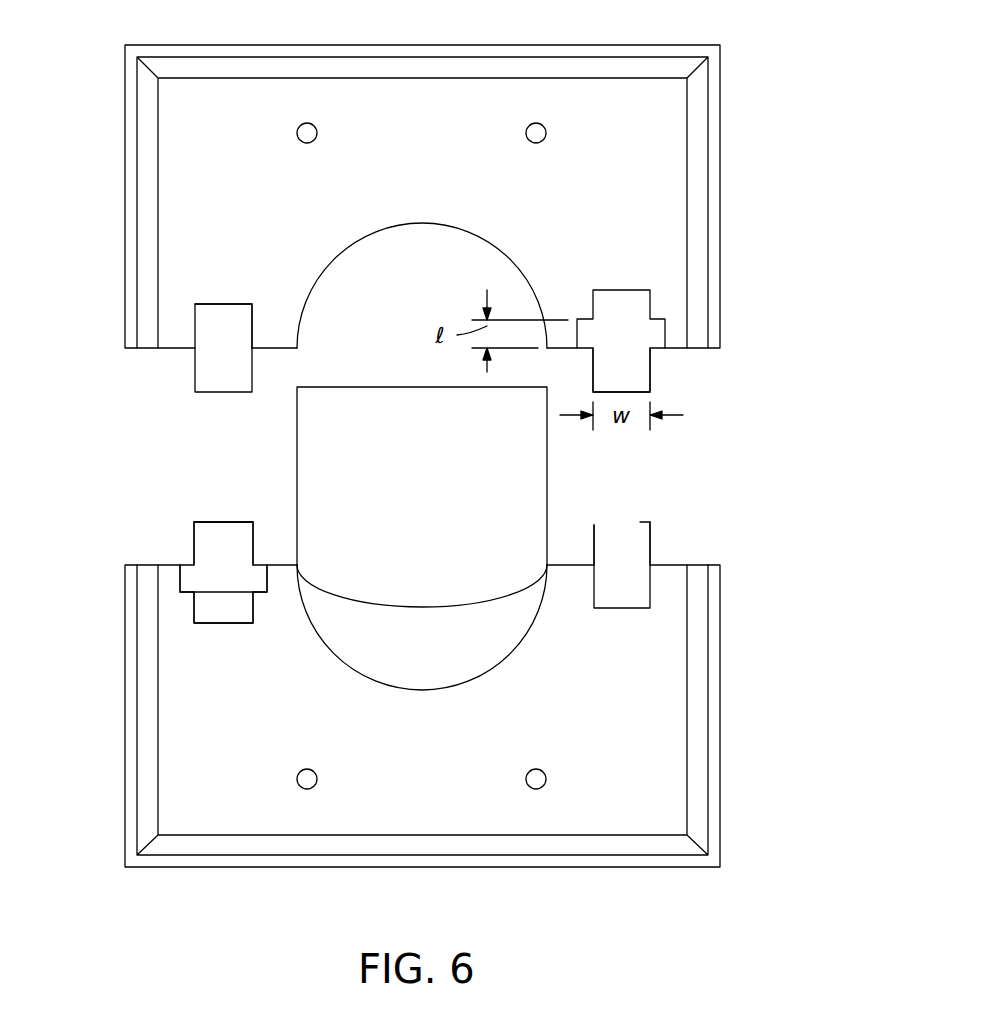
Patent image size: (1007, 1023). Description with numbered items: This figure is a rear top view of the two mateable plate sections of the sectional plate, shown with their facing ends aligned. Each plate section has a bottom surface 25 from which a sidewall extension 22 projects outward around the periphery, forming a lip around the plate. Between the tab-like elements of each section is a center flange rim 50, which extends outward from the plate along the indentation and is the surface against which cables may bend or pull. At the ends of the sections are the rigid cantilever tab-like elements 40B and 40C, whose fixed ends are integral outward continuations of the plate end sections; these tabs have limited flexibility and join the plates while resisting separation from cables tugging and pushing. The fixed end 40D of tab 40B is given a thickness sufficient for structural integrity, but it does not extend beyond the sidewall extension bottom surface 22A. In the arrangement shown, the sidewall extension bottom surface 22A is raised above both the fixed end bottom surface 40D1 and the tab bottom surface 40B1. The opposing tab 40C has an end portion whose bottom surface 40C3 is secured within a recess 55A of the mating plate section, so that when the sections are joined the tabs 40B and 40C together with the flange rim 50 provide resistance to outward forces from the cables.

The sidewall extension 22 is at (740, 98).
The sidewall extension bottom surface 22A is at (720, 170).
The bottom surface 25 is at (637, 742).
The center flange rim 50 is at (387, 687).
The cantilever tab-like element 40B is at (623, 393).
The tab bottom surface 40B1 is at (222, 532).
The cantilever tab-like element 40C is at (217, 303).
The bottom surface of end portion 40C3 is at (218, 371).
The fixed end 40D is at (670, 335).
The fixed end bottom surface 40D1 is at (197, 578).
The recess 55A is at (212, 613).